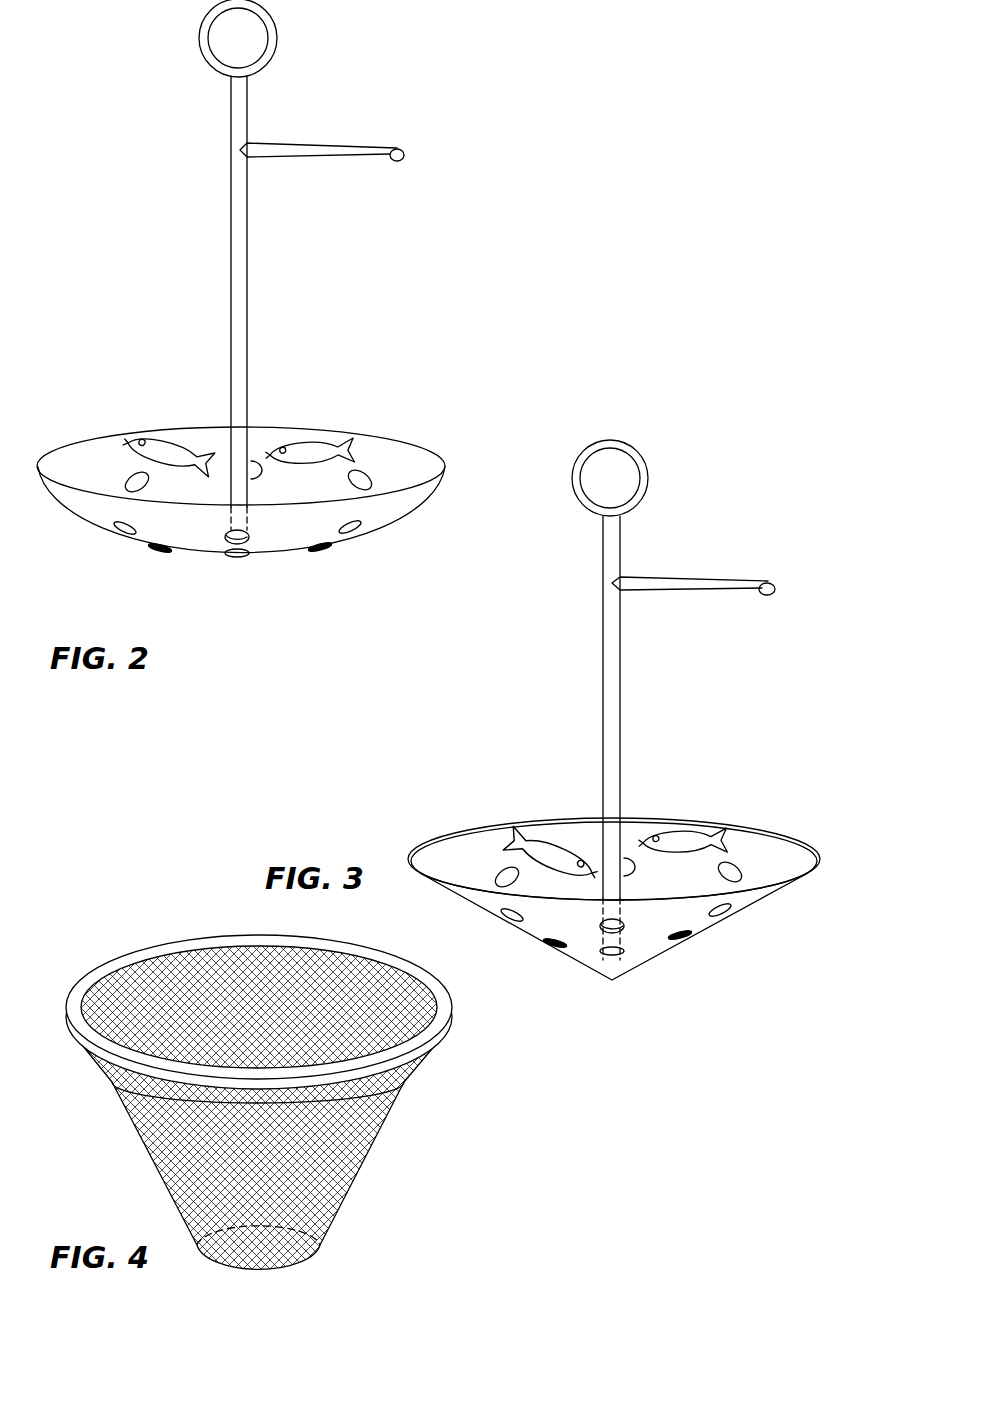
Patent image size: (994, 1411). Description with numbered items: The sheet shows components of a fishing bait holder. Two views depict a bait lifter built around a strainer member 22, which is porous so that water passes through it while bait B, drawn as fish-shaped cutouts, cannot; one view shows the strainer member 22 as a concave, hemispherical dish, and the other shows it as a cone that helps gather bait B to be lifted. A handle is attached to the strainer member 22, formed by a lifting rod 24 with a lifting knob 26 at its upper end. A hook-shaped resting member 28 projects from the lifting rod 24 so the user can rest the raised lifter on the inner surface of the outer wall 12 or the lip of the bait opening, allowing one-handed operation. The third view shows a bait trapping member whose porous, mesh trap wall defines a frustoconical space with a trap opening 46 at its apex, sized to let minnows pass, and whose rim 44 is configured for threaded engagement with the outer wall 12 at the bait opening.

In FIG. 4, the outer wall 12 is at (362, 1147).
In FIG. 2, the strainer member 22 is at (388, 508).
In FIG. 3, the strainer member 22 is at (698, 923).
In FIG. 2, the lifting rod 24 is at (240, 235).
In FIG. 3, the lifting rod 24 is at (620, 667).
In FIG. 2, the lifting knob 26 is at (275, 45).
In FIG. 3, the lifting knob 26 is at (648, 478).
In FIG. 2, the resting member 28 is at (403, 143).
In FIG. 3, the resting member 28 is at (770, 577).
In FIG. 4, the rim 44 is at (442, 1008).
In FIG. 4, the trap opening 46 is at (257, 1278).
In FIG. 2, the bait B is at (323, 450).
In FIG. 3, the bait B is at (697, 835).